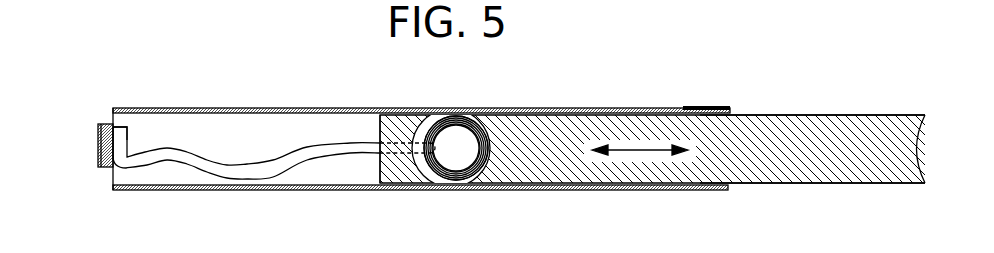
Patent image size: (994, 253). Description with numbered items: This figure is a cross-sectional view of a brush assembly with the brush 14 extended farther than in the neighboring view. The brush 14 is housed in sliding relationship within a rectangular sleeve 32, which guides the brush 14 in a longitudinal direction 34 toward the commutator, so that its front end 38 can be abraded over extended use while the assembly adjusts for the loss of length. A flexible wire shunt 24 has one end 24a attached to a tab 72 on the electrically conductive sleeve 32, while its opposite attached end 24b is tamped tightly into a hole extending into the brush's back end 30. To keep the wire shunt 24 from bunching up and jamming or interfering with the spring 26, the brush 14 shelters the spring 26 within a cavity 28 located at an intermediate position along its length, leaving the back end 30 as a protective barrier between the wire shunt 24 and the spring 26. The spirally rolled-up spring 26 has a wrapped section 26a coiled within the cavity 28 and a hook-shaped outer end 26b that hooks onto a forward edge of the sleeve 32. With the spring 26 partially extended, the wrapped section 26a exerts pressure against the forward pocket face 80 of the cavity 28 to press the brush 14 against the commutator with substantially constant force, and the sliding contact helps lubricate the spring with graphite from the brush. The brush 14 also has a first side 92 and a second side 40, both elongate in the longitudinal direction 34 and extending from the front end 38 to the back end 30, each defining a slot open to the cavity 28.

The brush 14 is at (799, 115).
The wire shunt 24 is at (227, 165).
The one end of wire shunt 24a is at (114, 137).
The opposite attached end of wire shunt 24b is at (400, 158).
The spring 26 is at (455, 181).
The wrapped section 26a is at (461, 181).
The outer end 26b is at (728, 106).
The cavity 28 is at (425, 124).
The back end 30 is at (380, 131).
The rectangular sleeve 32 is at (150, 108).
The longitudinal direction 34 is at (636, 149).
The front end 38 is at (920, 148).
The second side 40 is at (822, 184).
The tab 72 is at (98, 158).
The forward pocket face 80 is at (483, 150).
The first side 92 is at (853, 114).